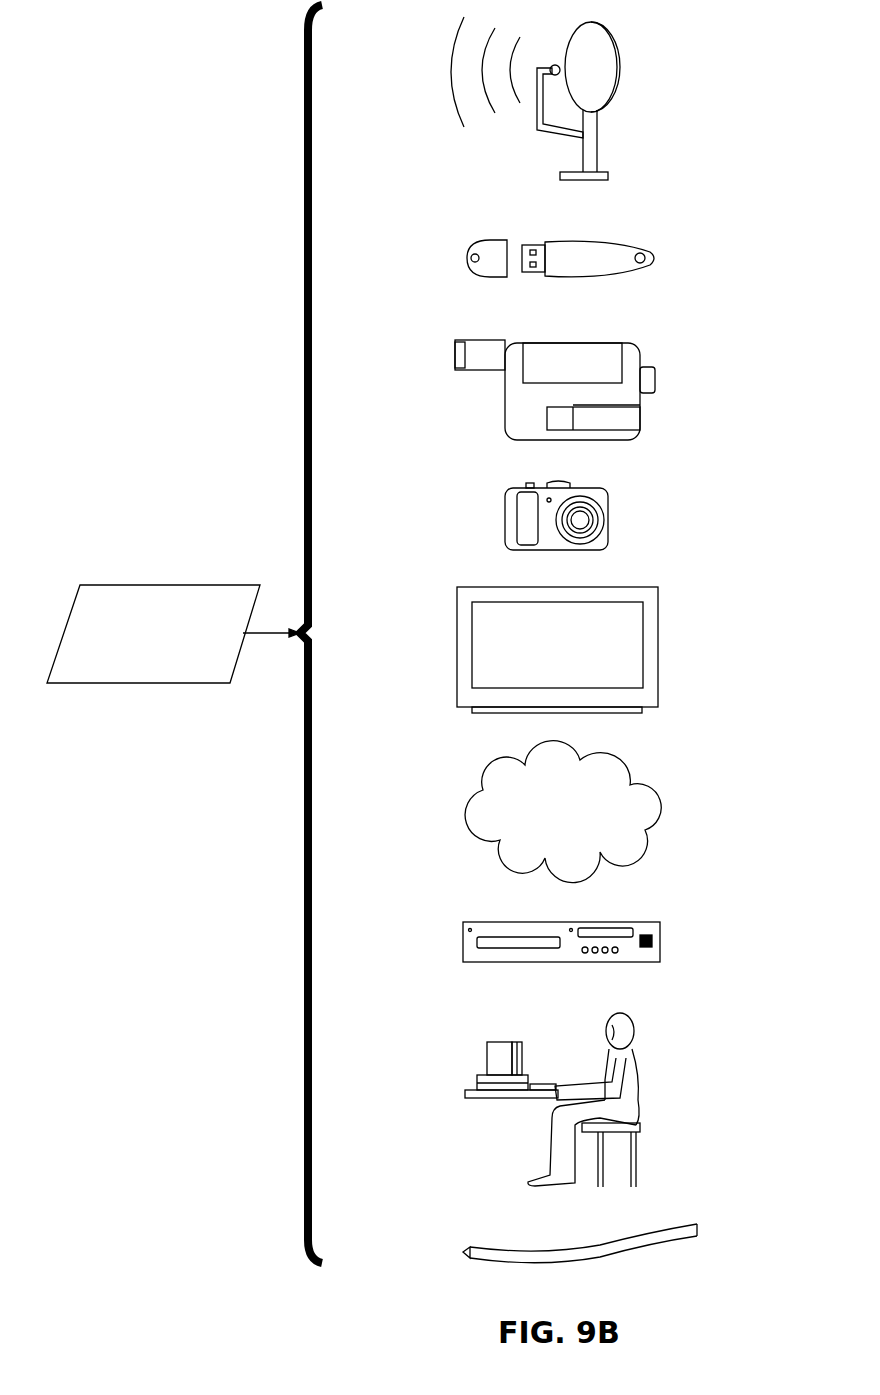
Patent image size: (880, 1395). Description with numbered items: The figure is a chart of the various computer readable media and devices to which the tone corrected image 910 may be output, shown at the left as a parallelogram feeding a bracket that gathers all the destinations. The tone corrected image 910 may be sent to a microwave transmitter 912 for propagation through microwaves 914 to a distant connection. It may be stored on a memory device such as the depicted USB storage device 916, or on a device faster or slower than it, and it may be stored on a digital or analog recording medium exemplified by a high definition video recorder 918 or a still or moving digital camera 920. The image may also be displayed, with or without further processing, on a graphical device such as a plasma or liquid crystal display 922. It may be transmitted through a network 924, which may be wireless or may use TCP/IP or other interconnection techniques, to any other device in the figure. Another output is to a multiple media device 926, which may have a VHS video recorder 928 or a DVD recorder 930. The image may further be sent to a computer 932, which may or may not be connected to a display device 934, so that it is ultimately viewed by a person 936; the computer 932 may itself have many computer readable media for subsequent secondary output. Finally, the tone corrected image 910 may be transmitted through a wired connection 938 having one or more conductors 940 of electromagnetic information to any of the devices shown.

The tone corrected image 910 is at (150, 585).
The microwave transmitter 912 is at (618, 87).
The microwaves 914 is at (462, 115).
The USB storage device 916 is at (637, 245).
The high definition video recorder 918 is at (642, 357).
The digital camera 920 is at (610, 505).
The plasma or liquid crystal display 922 is at (660, 652).
The network 924 is at (640, 795).
The multiple media device 926 is at (584, 929).
The VHS video recorder 928 is at (495, 948).
The DVD recorder 930 is at (620, 922).
The computer 932 is at (478, 1090).
The display device 934 is at (522, 1040).
The person 936 is at (640, 1065).
The wired connection 938 is at (655, 1232).
The conductors 940 is at (695, 1232).